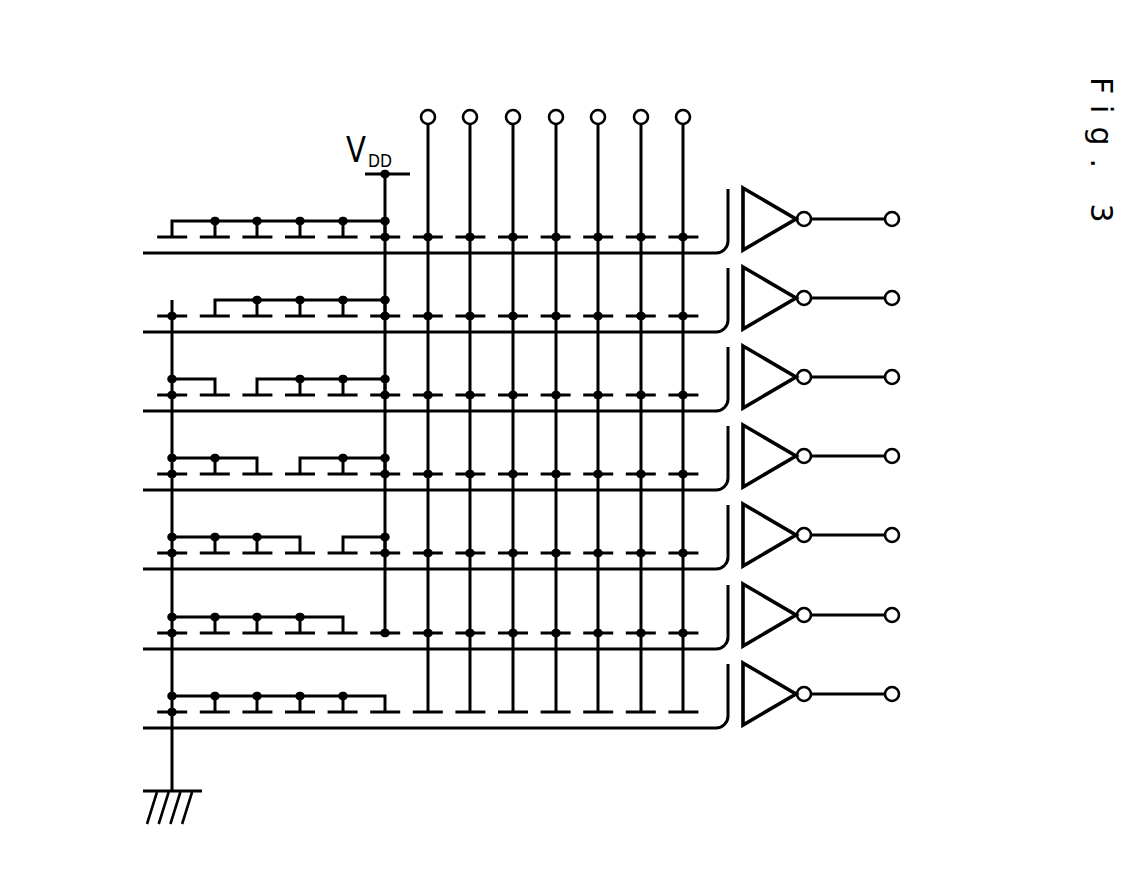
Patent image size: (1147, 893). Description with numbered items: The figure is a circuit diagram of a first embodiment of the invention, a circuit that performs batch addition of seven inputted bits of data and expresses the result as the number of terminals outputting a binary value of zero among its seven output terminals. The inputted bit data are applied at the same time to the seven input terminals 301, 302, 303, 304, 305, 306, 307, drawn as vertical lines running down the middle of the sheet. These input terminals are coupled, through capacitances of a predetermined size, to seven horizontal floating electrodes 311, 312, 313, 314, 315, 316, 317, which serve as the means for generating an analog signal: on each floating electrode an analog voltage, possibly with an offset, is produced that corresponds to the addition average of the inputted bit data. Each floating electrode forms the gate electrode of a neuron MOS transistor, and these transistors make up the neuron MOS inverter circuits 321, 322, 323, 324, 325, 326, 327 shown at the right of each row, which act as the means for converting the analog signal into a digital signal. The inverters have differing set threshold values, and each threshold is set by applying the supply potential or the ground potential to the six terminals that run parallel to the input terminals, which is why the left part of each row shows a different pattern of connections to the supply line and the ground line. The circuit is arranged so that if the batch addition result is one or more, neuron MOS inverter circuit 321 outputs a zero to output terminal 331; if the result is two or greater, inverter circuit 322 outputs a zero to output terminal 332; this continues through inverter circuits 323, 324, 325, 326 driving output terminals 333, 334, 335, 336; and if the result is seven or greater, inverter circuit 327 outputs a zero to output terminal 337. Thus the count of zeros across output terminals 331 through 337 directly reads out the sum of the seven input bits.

The input terminal 301 is at (428, 109).
The input terminal 302 is at (470, 109).
The input terminal 303 is at (513, 109).
The input terminal 304 is at (556, 109).
The input terminal 305 is at (598, 109).
The input terminal 306 is at (641, 109).
The input terminal 307 is at (683, 109).
The floating electrode 311 is at (143, 253).
The floating electrode 312 is at (143, 332).
The floating electrode 313 is at (143, 411).
The floating electrode 314 is at (143, 490).
The floating electrode 315 is at (143, 569).
The floating electrode 316 is at (143, 649).
The floating electrode 317 is at (143, 728).
The neuron MOS inverter circuit 321 is at (768, 222).
The neuron MOS inverter circuit 322 is at (768, 301).
The neuron MOS inverter circuit 323 is at (768, 380).
The neuron MOS inverter circuit 324 is at (768, 459).
The neuron MOS inverter circuit 325 is at (768, 538).
The neuron MOS inverter circuit 326 is at (768, 618).
The neuron MOS inverter circuit 327 is at (768, 697).
The output terminal 331 is at (900, 219).
The output terminal 332 is at (900, 298).
The output terminal 333 is at (900, 377).
The output terminal 334 is at (900, 456).
The output terminal 335 is at (900, 535).
The output terminal 336 is at (900, 615).
The output terminal 337 is at (900, 694).